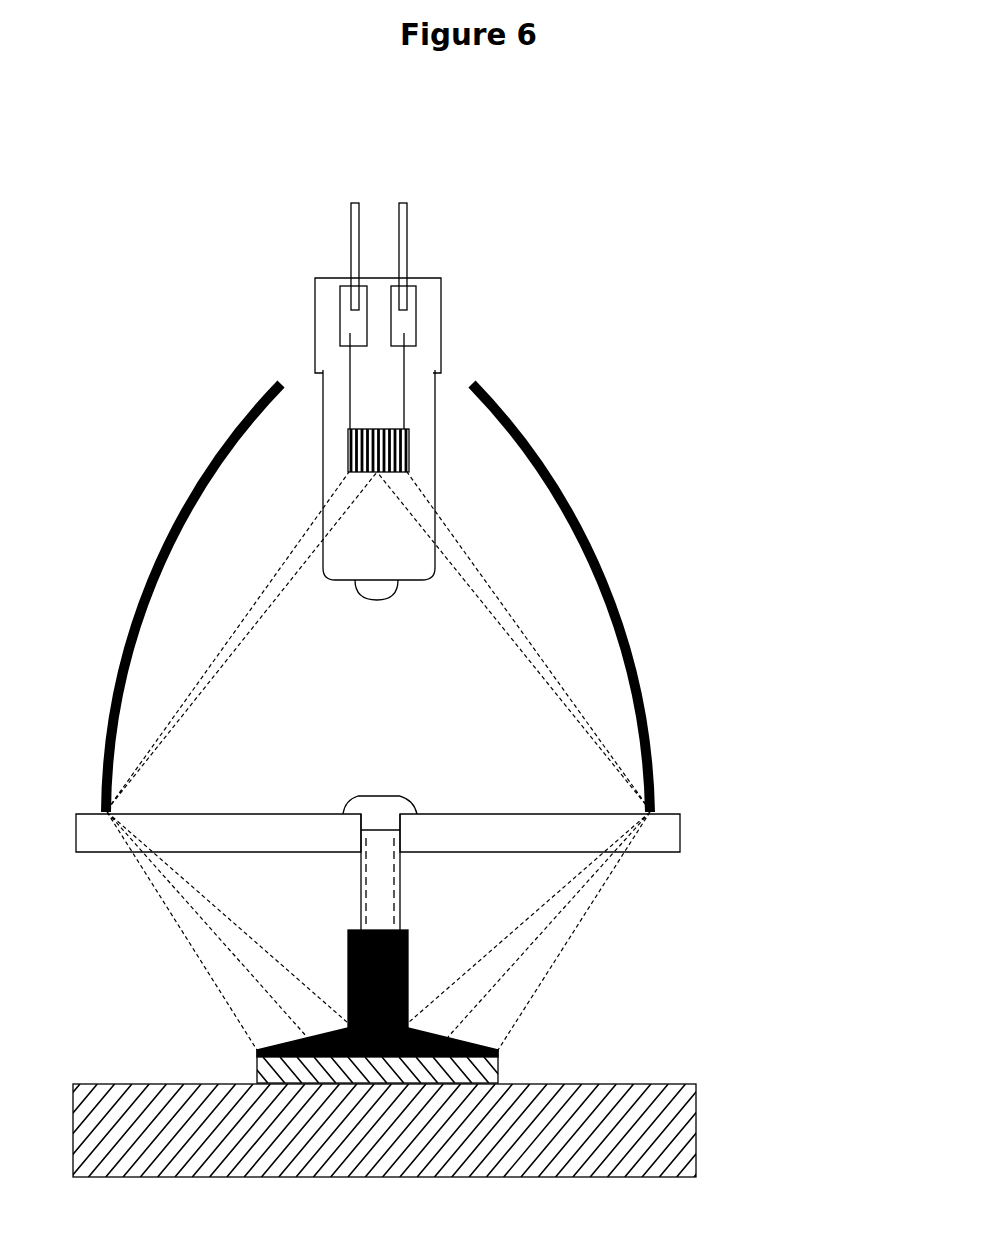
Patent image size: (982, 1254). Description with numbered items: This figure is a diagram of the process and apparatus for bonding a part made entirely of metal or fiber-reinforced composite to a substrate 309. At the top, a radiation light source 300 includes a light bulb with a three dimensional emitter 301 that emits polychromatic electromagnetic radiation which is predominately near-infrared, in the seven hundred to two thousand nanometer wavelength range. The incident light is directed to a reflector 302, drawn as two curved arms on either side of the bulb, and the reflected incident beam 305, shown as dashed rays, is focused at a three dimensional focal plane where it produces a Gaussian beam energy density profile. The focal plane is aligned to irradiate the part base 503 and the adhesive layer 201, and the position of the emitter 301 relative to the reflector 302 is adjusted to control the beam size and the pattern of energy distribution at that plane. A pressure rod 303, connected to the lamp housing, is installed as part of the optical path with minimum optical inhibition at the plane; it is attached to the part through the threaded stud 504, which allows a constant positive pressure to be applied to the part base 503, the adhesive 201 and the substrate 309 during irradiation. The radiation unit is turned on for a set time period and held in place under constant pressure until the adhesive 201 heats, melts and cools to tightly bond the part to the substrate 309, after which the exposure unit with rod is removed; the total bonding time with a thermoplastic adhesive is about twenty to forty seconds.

The radiation light source 300 is at (556, 367).
The three dimensional emitter 301 is at (405, 443).
The reflector 302 is at (560, 475).
The pressure rod 303 is at (405, 838).
The threaded stud 504 is at (407, 952).
The reflected incident beam 305 is at (575, 948).
The part base 503 is at (472, 1037).
The adhesive layer 201 is at (497, 1063).
The substrate 309 is at (684, 1075).